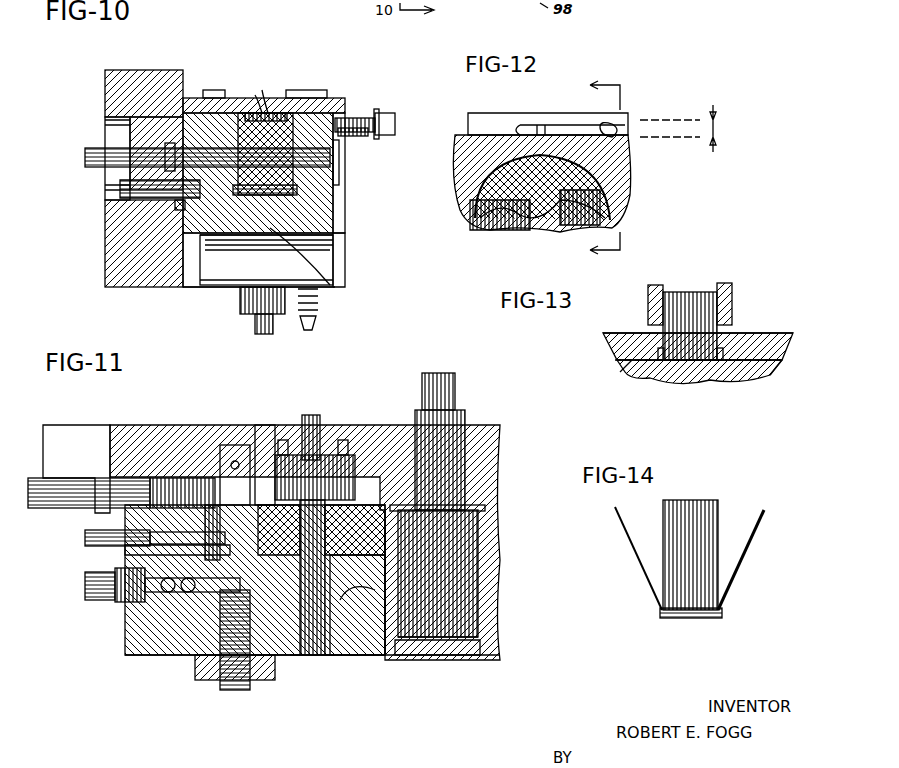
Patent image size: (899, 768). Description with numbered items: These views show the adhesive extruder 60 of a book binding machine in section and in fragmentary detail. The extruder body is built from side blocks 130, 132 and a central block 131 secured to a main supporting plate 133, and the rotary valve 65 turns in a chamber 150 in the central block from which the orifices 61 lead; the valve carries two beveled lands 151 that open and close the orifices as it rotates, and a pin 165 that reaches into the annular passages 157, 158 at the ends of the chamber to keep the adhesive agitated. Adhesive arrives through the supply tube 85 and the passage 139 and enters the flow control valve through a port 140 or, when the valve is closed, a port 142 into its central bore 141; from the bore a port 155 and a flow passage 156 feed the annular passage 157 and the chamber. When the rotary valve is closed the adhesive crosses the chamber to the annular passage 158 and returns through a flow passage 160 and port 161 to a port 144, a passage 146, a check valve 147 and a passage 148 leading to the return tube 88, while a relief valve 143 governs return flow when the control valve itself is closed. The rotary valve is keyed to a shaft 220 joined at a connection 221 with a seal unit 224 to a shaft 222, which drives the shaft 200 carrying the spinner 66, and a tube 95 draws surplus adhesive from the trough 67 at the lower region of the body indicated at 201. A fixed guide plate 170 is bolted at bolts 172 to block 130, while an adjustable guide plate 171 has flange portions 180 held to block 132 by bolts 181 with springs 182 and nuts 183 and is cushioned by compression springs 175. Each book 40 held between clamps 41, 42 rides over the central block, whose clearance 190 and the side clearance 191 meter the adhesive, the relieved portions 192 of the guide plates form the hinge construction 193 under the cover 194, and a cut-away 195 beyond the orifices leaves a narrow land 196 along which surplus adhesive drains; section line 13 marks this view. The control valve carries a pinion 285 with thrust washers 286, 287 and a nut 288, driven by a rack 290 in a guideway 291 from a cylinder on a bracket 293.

In FIG. 12, the section line 13 is at (614, 158).
In FIG. 13, the book 40 is at (690, 292).
In FIG. 14, the book 40 is at (712, 505).
In FIG. 13, the clamp 41 is at (652, 297).
In FIG. 13, the inner clamp member 42 is at (734, 290).
In FIG. 10, the extruder 60 is at (78, 232).
In FIG. 11, the extruder 60 is at (521, 478).
In FIG. 10, the orifices 61 is at (258, 110).
In FIG. 12, the orifices 61 is at (538, 122).
In FIG. 10, the rotary valve 65 is at (290, 205).
In FIG. 12, the rotary valve 65 is at (525, 230).
In FIG. 11, the rotary valve 65 is at (333, 660).
In FIG. 11, the spinner 66 is at (478, 595).
In FIG. 10, the trough 67 is at (328, 265).
In FIG. 11, the trough 67 is at (493, 625).
In FIG. 11, the tube 85 is at (86, 535).
In FIG. 11, the tube 88 is at (86, 582).
In FIG. 10, the tube 95 is at (256, 330).
In FIG. 10, the side block 130 is at (218, 225).
In FIG. 13, the side block 130 is at (772, 376).
In FIG. 11, the side block 130 is at (370, 500).
In FIG. 10, the central block 131 is at (330, 290).
In FIG. 12, the central block 131 is at (456, 205).
In FIG. 13, the central block 131 is at (692, 375).
In FIG. 11, the central block 131 is at (380, 572).
In FIG. 10, the side block 132 is at (335, 245).
In FIG. 13, the side block 132 is at (625, 375).
In FIG. 11, the side block 132 is at (420, 652).
In FIG. 10, the main supporting plate 133 is at (136, 75).
In FIG. 11, the main supporting plate 133 is at (308, 523).
In FIG. 11, the passage 139 is at (160, 546).
In FIG. 11, the port 140 is at (200, 500).
In FIG. 11, the central bore 141 is at (165, 656).
In FIG. 11, the port 142 is at (265, 428).
In FIG. 11, the relief valve 143 is at (207, 680).
In FIG. 11, the port 144 is at (185, 660).
In FIG. 11, the passage 146 is at (175, 660).
In FIG. 11, the check valve 147 is at (130, 658).
In FIG. 11, the passage 148 is at (125, 640).
In FIG. 12, the chamber 150 is at (478, 232).
In FIG. 11, the chamber 150 is at (388, 657).
In FIG. 10, the lands 151 is at (258, 195).
In FIG. 12, the lands 151 is at (628, 180).
In FIG. 11, the port 155 is at (279, 530).
In FIG. 11, the flow passage 156 is at (355, 530).
In FIG. 10, the annular passage 157 is at (238, 120).
In FIG. 12, the annular passage 157 is at (605, 208).
In FIG. 11, the annular passage 157 is at (400, 535).
In FIG. 10, the annular passage 158 is at (297, 112).
In FIG. 11, the annular passage 158 is at (358, 658).
In FIG. 11, the flow passage 160 is at (290, 658).
In FIG. 11, the port 161 is at (266, 680).
In FIG. 10, the pin 165 is at (300, 190).
In FIG. 10, the guide plate 170 is at (192, 96).
In FIG. 12, the guide plate 170 is at (630, 118).
In FIG. 13, the guide plate 170 is at (778, 334).
In FIG. 10, the guide plate 171 is at (328, 100).
In FIG. 13, the guide plate 171 is at (613, 348).
In FIG. 10, the bolts 172 is at (212, 88).
In FIG. 10, the compression springs 175 is at (322, 300).
In FIG. 10, the flange portions 180 is at (340, 140).
In FIG. 10, the bolts 181 is at (396, 122).
In FIG. 10, the springs 182 is at (350, 115).
In FIG. 10, the nuts 183 is at (345, 130).
In FIG. 12, the clearance 190 is at (528, 120).
In FIG. 13, the clearance 190 is at (668, 385).
In FIG. 13, the clearance 191 is at (630, 368).
In FIG. 12, the longitudinal relieved portions 192 is at (628, 128).
In FIG. 13, the longitudinal relieved portions 192 is at (645, 375).
In FIG. 14, the hinge type of cover construction 193 is at (660, 614).
In FIG. 14, the cover 194 is at (750, 555).
In FIG. 12, the cut-away portion 195 is at (630, 140).
In FIG. 12, the land 196 is at (548, 125).
In FIG. 11, the shaft 200 is at (432, 380).
In FIG. 10, the bottom edge 201 is at (190, 287).
In FIG. 11, the shaft 220 is at (325, 660).
In FIG. 10, the connection 221 is at (120, 128).
In FIG. 10, the shaft 222 is at (86, 162).
In FIG. 11, the shaft 222 is at (303, 412).
In FIG. 10, the seal unit 224 is at (148, 130).
In FIG. 11, the seal unit 224 is at (330, 415).
In FIG. 11, the pinion 285 is at (232, 440).
In FIG. 11, the thrust washer 286 is at (212, 505).
In FIG. 11, the thrust washer 287 is at (213, 685).
In FIG. 11, the nut 288 is at (262, 682).
In FIG. 11, the rack 290 is at (172, 500).
In FIG. 11, the guideway 291 is at (150, 500).
In FIG. 11, the bracket 293 is at (62, 440).